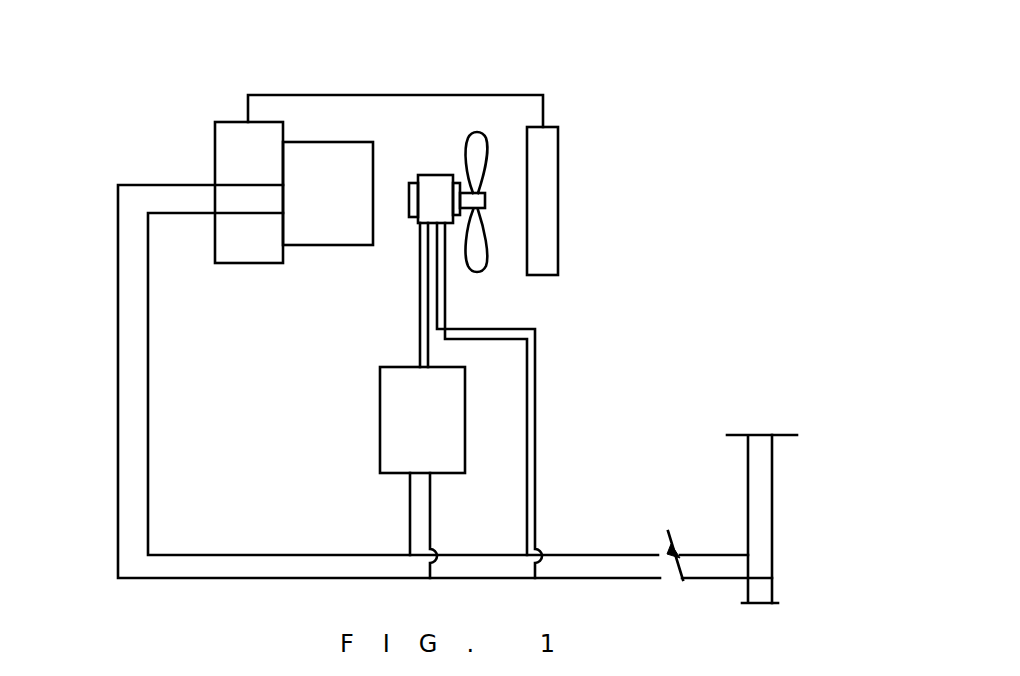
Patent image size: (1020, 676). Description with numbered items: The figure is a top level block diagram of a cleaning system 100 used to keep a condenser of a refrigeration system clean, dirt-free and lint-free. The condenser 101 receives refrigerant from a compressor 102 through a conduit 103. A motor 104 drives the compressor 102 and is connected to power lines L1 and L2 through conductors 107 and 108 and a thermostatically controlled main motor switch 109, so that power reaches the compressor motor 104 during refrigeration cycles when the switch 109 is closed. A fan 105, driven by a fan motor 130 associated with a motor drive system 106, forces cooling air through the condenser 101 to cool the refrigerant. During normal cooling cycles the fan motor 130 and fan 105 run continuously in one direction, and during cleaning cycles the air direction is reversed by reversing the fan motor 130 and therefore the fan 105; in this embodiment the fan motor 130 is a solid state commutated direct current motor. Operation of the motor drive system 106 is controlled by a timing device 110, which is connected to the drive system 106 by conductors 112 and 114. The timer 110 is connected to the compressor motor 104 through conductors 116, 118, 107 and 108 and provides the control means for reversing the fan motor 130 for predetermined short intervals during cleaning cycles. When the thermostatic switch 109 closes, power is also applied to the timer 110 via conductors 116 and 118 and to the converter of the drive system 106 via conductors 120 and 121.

The cleaning system 100 is at (207, 62).
The condenser 101 is at (558, 213).
The compressor 102 is at (263, 265).
The conduit 103 is at (300, 95).
The motor 104 is at (307, 142).
The fan 105 is at (487, 133).
The motor drive system 106 is at (437, 175).
The conductor 107 is at (197, 555).
The conductor 108 is at (200, 580).
The thermostatically controlled main motor switch 109 is at (670, 533).
The timing device 110 is at (382, 385).
The conductor 112 is at (420, 288).
The conductor 114 is at (427, 328).
The conductor 116 is at (410, 507).
The conductor 118 is at (432, 502).
The conductor 120 is at (527, 405).
The conductor 121 is at (535, 450).
The fan motor 130 is at (409, 183).
The power line L1 is at (762, 503).
The power line L2 is at (786, 503).